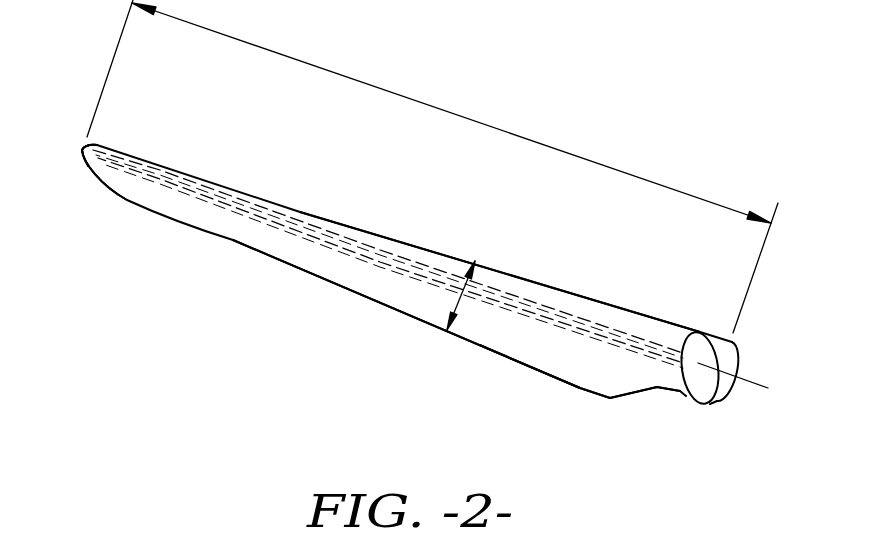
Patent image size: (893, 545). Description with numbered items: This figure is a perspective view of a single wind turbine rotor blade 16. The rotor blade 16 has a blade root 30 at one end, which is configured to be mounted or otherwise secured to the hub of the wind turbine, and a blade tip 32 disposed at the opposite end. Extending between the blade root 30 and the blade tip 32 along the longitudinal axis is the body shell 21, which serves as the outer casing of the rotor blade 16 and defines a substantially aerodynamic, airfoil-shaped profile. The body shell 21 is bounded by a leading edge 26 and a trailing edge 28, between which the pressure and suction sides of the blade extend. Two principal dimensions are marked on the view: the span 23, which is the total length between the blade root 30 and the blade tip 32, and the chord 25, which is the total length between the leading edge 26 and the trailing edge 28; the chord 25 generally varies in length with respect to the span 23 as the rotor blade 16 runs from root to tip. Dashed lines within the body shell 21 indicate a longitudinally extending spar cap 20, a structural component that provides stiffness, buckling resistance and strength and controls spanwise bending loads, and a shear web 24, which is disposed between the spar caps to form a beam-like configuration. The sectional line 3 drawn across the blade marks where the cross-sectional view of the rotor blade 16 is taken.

The rotor blade 16 is at (662, 115).
The spar cap 20 is at (362, 255).
The body shell 21 is at (288, 240).
The span 23 is at (365, 82).
The shear web 24 is at (82, 150).
The chord 25 is at (453, 293).
The leading edge 26 is at (593, 296).
The trailing edge 28 is at (573, 388).
The blade root 30 is at (695, 385).
The blade tip 32 is at (82, 148).
The sectional line 3 is at (545, 257).